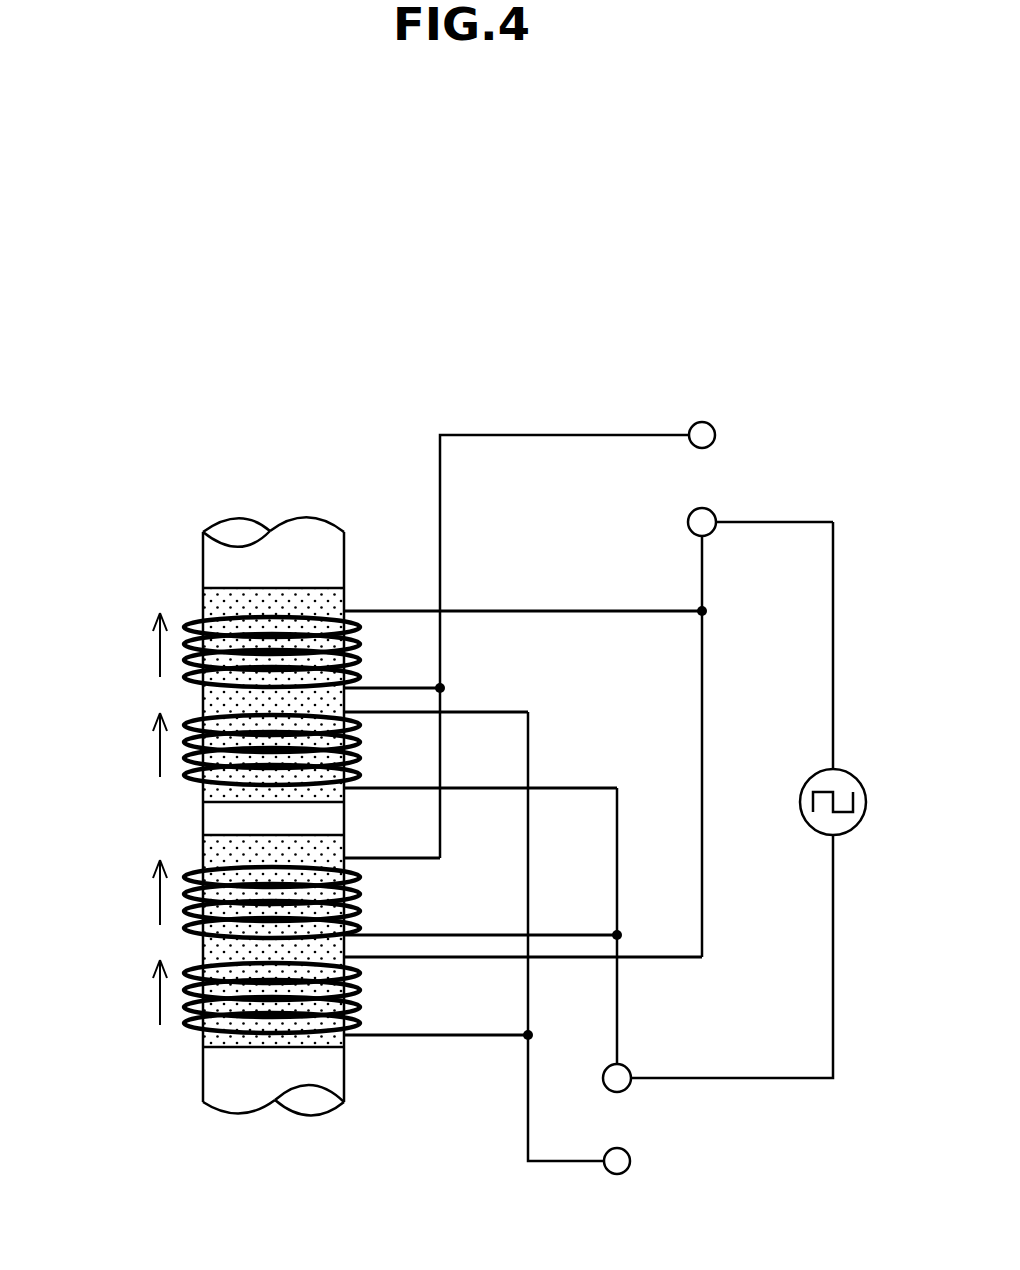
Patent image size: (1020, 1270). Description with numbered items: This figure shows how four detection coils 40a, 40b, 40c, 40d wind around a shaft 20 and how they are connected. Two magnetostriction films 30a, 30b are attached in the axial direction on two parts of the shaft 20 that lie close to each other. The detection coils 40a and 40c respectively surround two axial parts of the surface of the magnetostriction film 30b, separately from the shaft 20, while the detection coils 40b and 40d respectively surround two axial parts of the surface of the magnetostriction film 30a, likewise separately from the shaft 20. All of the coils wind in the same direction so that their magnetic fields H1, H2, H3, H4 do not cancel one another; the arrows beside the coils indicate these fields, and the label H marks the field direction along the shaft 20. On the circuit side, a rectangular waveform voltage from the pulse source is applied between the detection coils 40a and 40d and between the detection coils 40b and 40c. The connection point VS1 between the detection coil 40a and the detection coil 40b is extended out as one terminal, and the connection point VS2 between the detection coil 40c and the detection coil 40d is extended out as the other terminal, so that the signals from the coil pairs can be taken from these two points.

The shaft 20 is at (323, 562).
The magnetostriction film 30a is at (243, 857).
The magnetostriction film 30b is at (238, 605).
The detection coil 40a is at (188, 622).
The detection coil 40b is at (193, 930).
The detection coil 40c is at (188, 720).
The detection coil 40d is at (193, 1027).
The direction of flow H is at (218, 464).
The magnetic field H1 is at (129, 645).
The magnetic field H2 is at (129, 745).
The magnetic field H3 is at (129, 892).
The magnetic field H4 is at (129, 992).
The connection point VS1 is at (730, 435).
The connection point VS2 is at (647, 1162).